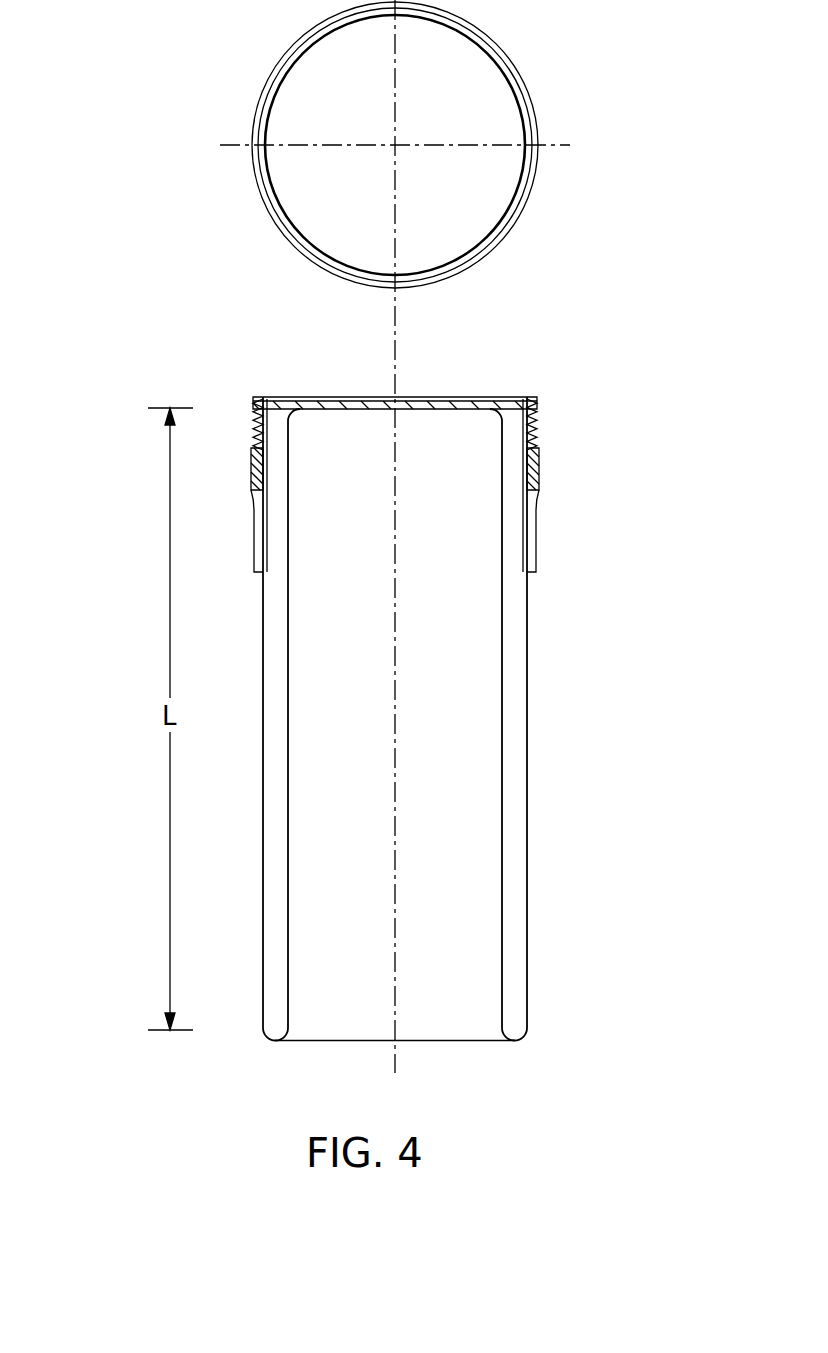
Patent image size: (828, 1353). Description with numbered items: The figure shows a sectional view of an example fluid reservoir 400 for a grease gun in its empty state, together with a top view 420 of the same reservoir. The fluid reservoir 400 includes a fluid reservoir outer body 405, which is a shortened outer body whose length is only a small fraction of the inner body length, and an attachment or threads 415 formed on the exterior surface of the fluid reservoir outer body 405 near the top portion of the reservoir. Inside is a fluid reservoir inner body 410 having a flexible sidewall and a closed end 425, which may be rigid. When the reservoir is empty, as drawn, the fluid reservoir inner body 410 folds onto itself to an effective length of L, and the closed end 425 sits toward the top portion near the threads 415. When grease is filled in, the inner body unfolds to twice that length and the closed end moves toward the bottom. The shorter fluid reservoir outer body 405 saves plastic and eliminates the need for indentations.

The fluid reservoir 400 is at (213, 370).
The fluid reservoir outer body 405 is at (535, 530).
The fluid reservoir inner body 410 is at (527, 740).
The attachment/threads 415 is at (535, 422).
The top view 420 is at (233, 83).
The closed end 425 is at (313, 404).